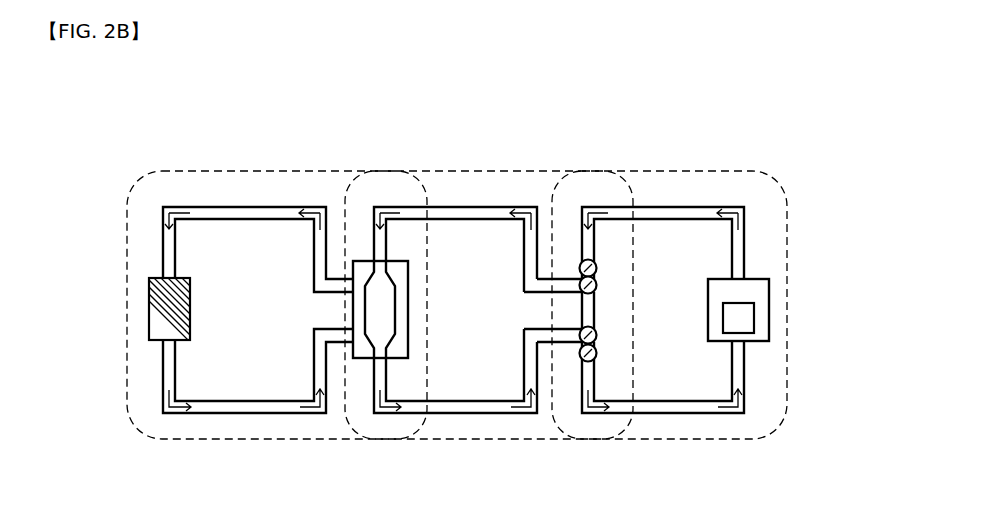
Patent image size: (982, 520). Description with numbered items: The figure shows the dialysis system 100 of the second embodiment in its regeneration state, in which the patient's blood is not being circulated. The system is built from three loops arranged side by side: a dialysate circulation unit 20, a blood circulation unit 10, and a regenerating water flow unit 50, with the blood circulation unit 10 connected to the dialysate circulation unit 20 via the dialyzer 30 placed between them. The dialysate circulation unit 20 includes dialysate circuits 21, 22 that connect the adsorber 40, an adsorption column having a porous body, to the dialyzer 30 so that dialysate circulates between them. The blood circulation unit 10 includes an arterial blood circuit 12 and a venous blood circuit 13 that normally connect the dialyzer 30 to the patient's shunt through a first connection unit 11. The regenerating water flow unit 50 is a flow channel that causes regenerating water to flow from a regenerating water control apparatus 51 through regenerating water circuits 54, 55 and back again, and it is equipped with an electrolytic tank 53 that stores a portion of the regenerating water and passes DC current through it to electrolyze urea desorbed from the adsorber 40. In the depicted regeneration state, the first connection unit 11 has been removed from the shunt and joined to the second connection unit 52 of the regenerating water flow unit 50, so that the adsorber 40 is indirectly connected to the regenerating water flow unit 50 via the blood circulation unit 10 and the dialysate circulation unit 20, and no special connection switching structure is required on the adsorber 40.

The dialysis system 100 is at (144, 130).
The dialysate circulation unit 20 is at (217, 295).
The dialysate circuit 21 is at (302, 207).
The dialysate circuit 22 is at (245, 414).
The adsorber 40 is at (148, 300).
The dialyzer 30 is at (363, 261).
The blood circulation unit 10 is at (498, 295).
The first connection unit 11 is at (582, 262).
The arterial blood circuit 12 is at (455, 207).
The venous blood circuit 13 is at (467, 414).
The regenerating water flow unit 50 is at (670, 295).
The regenerating water control apparatus 51 is at (771, 284).
The second connection unit 52 is at (592, 266).
The electrolytic tank 53 is at (755, 320).
The regenerating water circuit 54 is at (667, 207).
The regenerating water circuit 55 is at (672, 414).